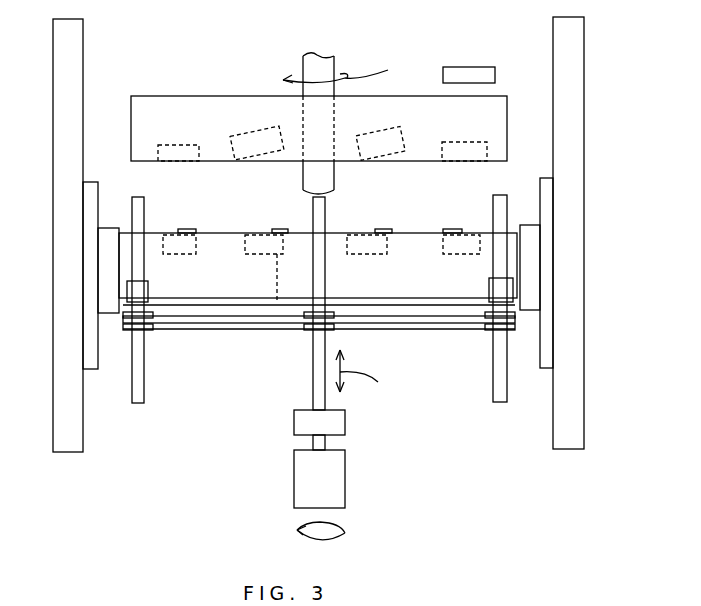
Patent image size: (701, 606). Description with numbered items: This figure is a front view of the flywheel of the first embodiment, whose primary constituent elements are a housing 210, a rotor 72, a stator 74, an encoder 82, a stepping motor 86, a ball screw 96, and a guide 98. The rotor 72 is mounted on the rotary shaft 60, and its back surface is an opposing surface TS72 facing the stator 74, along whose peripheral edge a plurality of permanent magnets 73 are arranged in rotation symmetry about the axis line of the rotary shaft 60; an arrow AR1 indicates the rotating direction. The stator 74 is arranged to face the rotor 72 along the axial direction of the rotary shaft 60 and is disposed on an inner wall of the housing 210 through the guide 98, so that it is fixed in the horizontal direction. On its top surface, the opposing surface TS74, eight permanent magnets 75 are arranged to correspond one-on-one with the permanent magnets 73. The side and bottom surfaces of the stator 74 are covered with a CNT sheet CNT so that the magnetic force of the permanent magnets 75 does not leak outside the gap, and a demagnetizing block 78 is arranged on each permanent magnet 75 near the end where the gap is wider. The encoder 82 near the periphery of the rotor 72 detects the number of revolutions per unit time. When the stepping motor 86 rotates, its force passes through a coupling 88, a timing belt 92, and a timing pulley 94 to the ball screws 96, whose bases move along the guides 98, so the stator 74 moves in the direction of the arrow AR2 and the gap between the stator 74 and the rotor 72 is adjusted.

The rotary shaft 60 is at (312, 70).
The rotor 72 is at (143, 128).
The permanent magnets 73 is at (181, 148).
The stator 74 is at (197, 285).
The permanent magnets 75 is at (260, 245).
The demagnetizing block 78 is at (277, 300).
The encoder 82 is at (467, 75).
The stepping motor 86 is at (303, 479).
The coupling 88 is at (303, 425).
The timing belt 92 is at (427, 322).
The timing pulley 94 is at (512, 330).
The ball screw 96 is at (503, 292).
The guide 98 is at (545, 337).
The housing 210 is at (567, 92).
The opposing surface TS72 is at (420, 162).
The opposing surface TS74 is at (216, 233).
The CNT sheet CNT is at (520, 250).
The arrow AR1 is at (349, 63).
The arrow AR2 is at (367, 382).